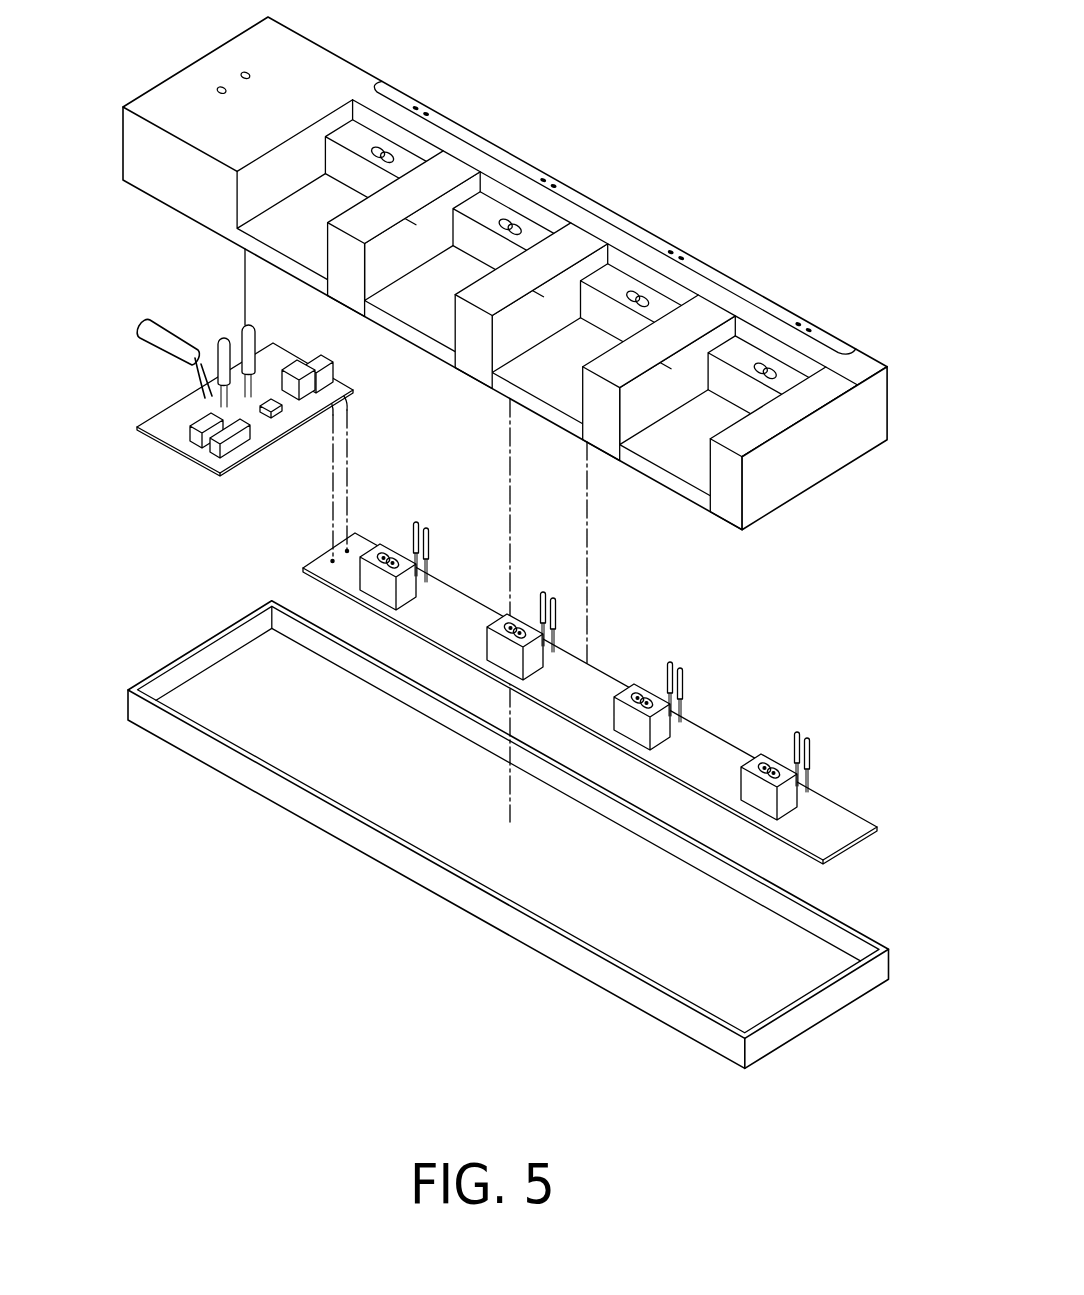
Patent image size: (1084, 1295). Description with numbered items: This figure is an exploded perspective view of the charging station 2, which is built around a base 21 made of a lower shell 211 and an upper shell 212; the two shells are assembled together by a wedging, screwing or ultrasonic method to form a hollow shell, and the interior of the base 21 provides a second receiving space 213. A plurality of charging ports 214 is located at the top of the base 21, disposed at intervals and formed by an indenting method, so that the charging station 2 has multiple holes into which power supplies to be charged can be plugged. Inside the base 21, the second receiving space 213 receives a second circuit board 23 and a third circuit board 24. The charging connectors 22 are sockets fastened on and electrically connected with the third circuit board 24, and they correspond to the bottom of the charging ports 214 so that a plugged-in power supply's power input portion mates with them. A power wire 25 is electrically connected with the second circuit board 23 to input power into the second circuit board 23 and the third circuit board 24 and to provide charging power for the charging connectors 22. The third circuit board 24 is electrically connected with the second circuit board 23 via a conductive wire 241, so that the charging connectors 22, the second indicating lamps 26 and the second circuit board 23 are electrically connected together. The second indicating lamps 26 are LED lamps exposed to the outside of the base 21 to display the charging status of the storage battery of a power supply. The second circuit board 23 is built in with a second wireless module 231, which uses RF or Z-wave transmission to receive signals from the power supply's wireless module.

The charging station 2 is at (534, 277).
The base 21 is at (508, 835).
The lower shell 211 is at (438, 880).
The upper shell 212 is at (813, 465).
The second receiving space 213 is at (650, 925).
The charging port 214 is at (388, 132).
The charging connector 22 is at (635, 697).
The second circuit board 23 is at (214, 433).
The second wireless module 231 is at (273, 416).
The third circuit board 24 is at (710, 757).
The conductive wire 241 is at (352, 401).
The power wire 25 is at (168, 322).
The second indicating lamp 26 is at (682, 688).